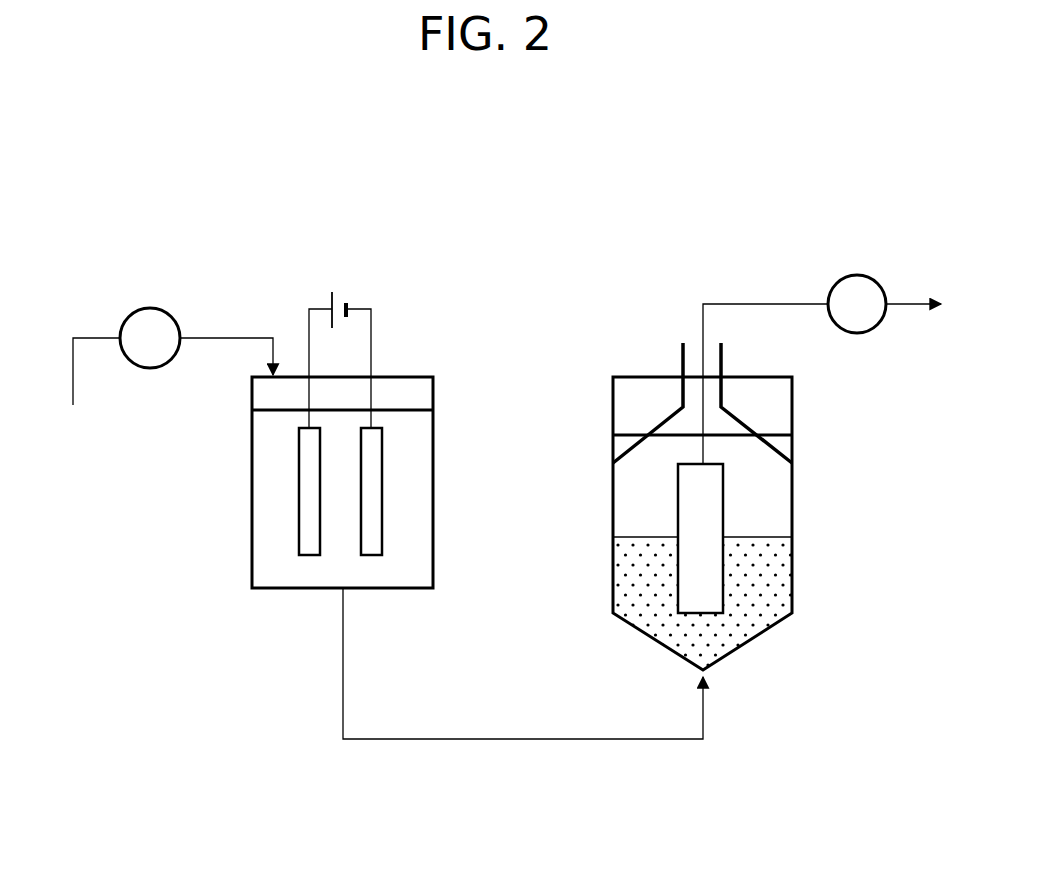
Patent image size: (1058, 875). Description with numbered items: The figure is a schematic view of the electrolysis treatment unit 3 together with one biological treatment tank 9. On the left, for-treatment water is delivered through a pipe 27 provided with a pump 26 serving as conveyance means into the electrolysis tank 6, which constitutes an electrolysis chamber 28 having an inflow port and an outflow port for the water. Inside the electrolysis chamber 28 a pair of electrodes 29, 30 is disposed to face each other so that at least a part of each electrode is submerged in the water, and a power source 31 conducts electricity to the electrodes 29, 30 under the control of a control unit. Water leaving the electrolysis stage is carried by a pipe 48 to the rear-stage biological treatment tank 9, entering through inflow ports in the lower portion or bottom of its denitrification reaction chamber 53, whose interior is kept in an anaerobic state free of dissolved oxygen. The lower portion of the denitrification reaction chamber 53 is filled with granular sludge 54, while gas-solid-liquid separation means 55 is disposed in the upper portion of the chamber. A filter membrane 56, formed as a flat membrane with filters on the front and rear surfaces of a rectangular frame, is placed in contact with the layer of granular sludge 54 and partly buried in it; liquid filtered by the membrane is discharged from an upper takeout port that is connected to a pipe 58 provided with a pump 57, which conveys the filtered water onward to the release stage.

The electrolysis treatment unit 3 is at (466, 270).
The electrolysis tank 6 is at (433, 434).
The biological treatment tank 9 is at (822, 494).
The pump 26 is at (148, 308).
The pipe 27 is at (93, 335).
The electrolysis chamber 28 is at (292, 573).
The electrode 29 is at (310, 505).
The electrode 30 is at (370, 510).
The power source 31 is at (337, 295).
The pipe 48 is at (497, 740).
The denitrification reaction chamber 53 is at (751, 467).
The granular sludge 54 is at (767, 585).
The gas-solid-liquid separation means 55 is at (633, 387).
The filter membrane 56 is at (712, 478).
The pump 57 is at (853, 275).
The pipe 58 is at (755, 300).